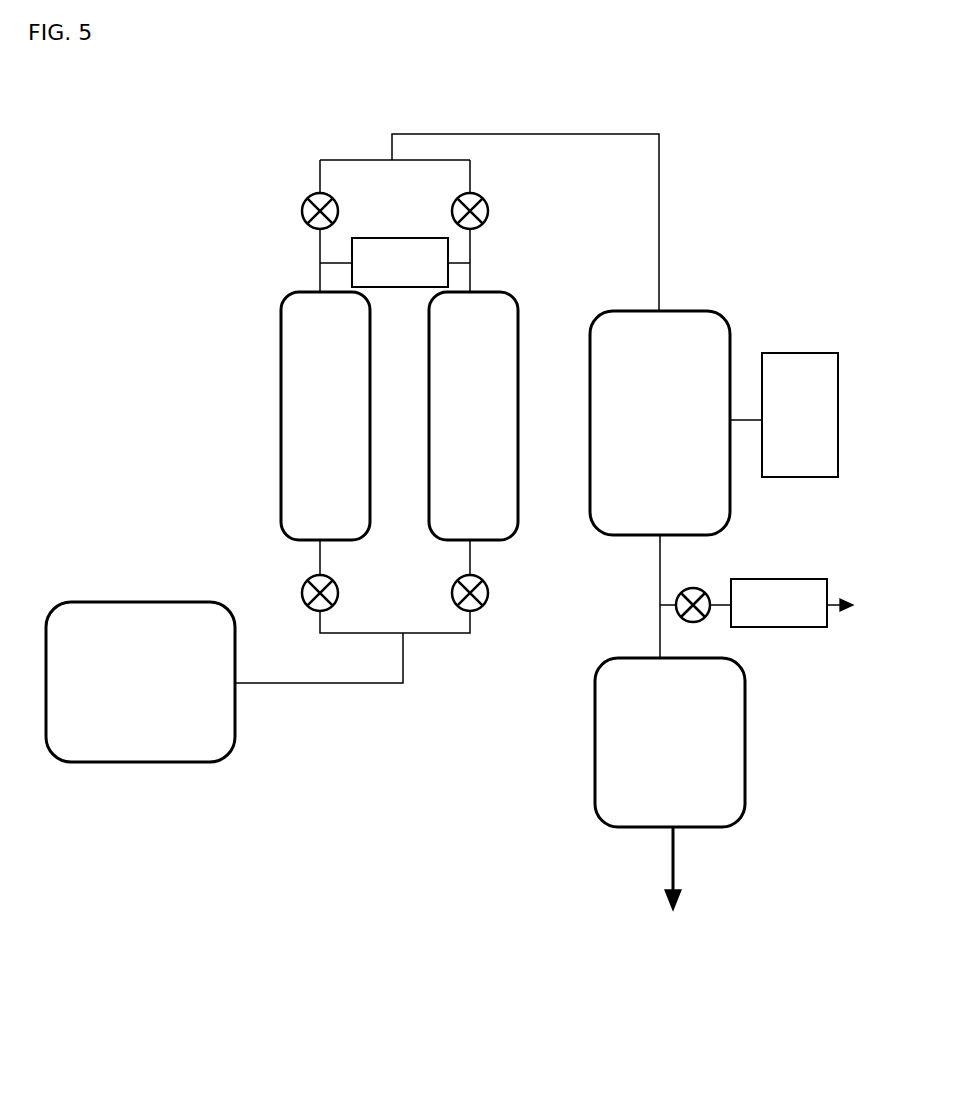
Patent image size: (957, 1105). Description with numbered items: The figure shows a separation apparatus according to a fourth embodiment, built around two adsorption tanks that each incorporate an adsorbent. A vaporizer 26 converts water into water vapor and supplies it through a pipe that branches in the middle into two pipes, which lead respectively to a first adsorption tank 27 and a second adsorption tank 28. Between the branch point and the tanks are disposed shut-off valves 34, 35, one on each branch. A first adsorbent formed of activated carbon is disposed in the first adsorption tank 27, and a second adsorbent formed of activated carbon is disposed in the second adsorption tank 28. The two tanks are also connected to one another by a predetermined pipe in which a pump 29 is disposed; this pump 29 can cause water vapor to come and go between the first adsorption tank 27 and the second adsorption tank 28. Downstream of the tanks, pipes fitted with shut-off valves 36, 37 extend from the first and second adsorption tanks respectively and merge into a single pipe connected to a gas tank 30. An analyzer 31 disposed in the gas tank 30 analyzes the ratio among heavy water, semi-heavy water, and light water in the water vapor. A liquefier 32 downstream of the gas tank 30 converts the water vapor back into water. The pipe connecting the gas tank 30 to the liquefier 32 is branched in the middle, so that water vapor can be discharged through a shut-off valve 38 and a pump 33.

The vaporizer 26 is at (235, 727).
The first adsorption tank 27 is at (280, 403).
The second adsorption tank 28 is at (518, 398).
The pump 29 is at (392, 238).
The gas tank 30 is at (695, 311).
The analyzer 31 is at (838, 420).
The liquefier 32 is at (745, 740).
The pump 33 is at (793, 627).
The shut-off valve 34 is at (302, 592).
The shut-off valve 35 is at (490, 590).
The shut-off valve 36 is at (300, 211).
The shut-off valve 37 is at (488, 211).
The shut-off valve 38 is at (695, 587).